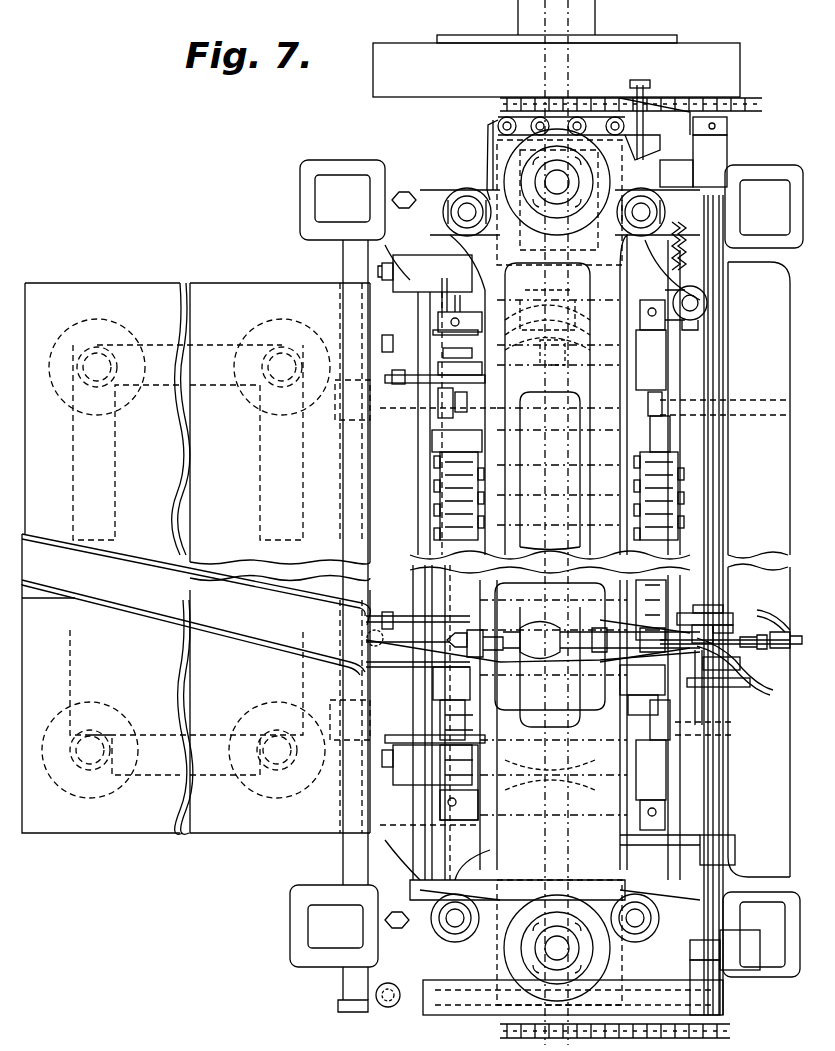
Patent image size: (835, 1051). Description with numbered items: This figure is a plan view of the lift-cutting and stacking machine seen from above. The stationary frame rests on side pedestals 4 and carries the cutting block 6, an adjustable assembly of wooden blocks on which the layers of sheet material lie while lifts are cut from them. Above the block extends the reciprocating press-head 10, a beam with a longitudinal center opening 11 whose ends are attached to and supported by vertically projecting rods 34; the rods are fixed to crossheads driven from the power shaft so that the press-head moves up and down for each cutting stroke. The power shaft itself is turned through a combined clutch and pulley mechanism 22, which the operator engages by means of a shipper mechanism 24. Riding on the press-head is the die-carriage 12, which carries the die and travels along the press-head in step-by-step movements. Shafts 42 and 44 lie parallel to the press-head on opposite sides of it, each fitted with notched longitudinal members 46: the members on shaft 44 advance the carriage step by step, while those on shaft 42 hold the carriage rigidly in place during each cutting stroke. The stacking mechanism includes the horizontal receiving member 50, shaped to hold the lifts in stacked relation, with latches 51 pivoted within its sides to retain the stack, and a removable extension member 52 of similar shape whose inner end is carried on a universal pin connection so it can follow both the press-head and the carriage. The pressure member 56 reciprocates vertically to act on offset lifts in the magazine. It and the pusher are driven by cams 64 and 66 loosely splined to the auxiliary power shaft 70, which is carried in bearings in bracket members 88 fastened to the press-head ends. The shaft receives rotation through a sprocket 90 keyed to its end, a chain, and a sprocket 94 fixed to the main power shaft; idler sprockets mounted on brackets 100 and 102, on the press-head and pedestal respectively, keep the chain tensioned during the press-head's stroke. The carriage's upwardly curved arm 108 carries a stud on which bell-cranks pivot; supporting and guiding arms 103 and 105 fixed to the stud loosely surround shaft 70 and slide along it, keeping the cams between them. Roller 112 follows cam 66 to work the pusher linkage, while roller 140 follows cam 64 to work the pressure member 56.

The side pedestals 4 is at (388, 190).
The cutting block 6 is at (550, 525).
The press-head 10 is at (559, 409).
The longitudinal center opening 11 is at (525, 480).
The die-carriage 12 is at (553, 699).
The combined clutch and pulley mechanism 22 is at (740, 75).
The shipper mechanism 24 is at (486, 124).
The vertically projecting rods 34 is at (467, 212).
The shaft 42 is at (455, 395).
The shaft 44 is at (660, 400).
The notched longitudinal members 46 is at (440, 490).
The receiving member 50 is at (378, 628).
The latches 51 is at (458, 630).
The removable extension member 52 is at (196, 558).
The pressure member 56 is at (455, 645).
The cam 64 is at (745, 626).
The cam 66 is at (745, 688).
The auxiliary power shaft 70 is at (718, 210).
The bracket members 88 is at (718, 155).
The sprocket 90 is at (727, 123).
The sprocket 94 is at (505, 106).
The bracket 100 is at (740, 102).
The bracket 102 is at (615, 148).
The supporting and guiding arm 103 is at (735, 684).
The supporting and guiding arm 105 is at (720, 612).
The arm 108 is at (755, 660).
The roller 112 is at (705, 685).
The roller 140 is at (728, 626).